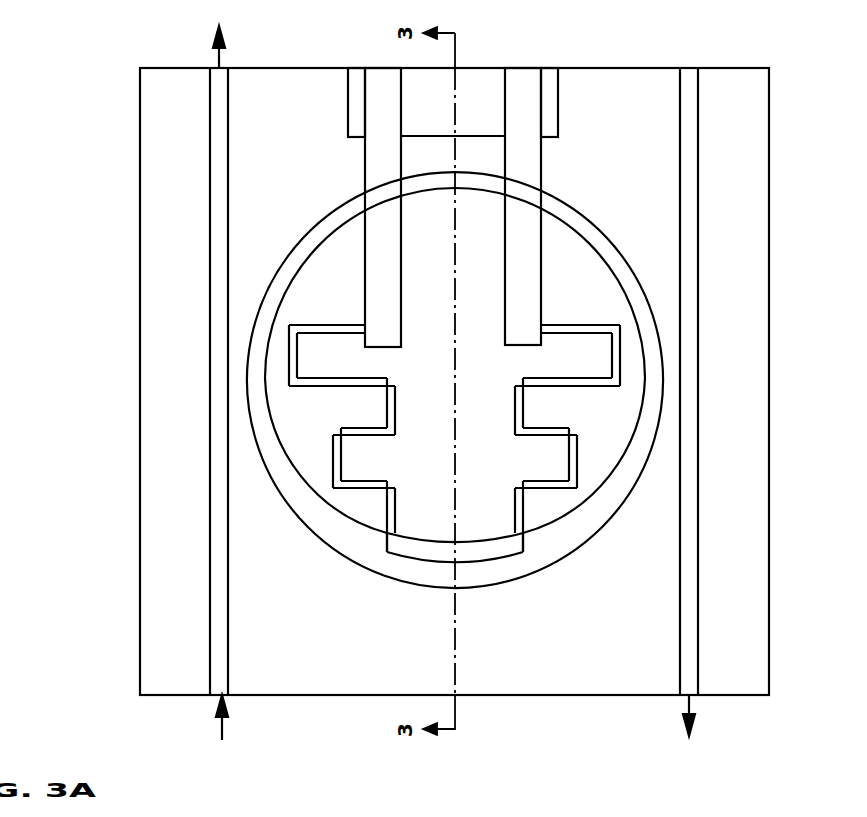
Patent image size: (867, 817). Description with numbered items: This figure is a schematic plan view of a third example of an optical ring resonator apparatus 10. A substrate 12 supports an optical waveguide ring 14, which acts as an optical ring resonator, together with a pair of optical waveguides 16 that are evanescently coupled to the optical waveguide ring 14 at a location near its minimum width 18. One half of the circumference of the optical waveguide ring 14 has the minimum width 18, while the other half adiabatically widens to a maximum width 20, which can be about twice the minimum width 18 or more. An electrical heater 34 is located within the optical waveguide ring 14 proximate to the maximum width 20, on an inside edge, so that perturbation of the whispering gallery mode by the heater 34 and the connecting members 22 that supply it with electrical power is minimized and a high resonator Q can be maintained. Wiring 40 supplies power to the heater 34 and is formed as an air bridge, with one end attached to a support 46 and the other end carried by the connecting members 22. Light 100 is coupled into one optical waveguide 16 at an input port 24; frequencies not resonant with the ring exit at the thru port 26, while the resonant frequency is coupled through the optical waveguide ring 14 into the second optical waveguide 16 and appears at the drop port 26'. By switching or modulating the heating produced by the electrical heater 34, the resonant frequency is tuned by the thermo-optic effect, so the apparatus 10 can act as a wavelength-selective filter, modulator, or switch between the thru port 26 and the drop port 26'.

The optical ring resonator apparatus 10 is at (739, 714).
The substrate 12 is at (163, 659).
The optical waveguide ring 14 is at (605, 528).
The optical waveguide 16 is at (232, 607).
The minimum width 18 is at (430, 189).
The maximum width 20 is at (458, 593).
The connecting member 22 is at (342, 452).
The input port 24 is at (233, 692).
The output port 26 is at (243, 84).
The exit port 26' is at (721, 677).
The electrical heater 34 is at (430, 540).
The wiring 40 is at (364, 160).
The support 46 is at (558, 96).
The light 100 is at (226, 722).